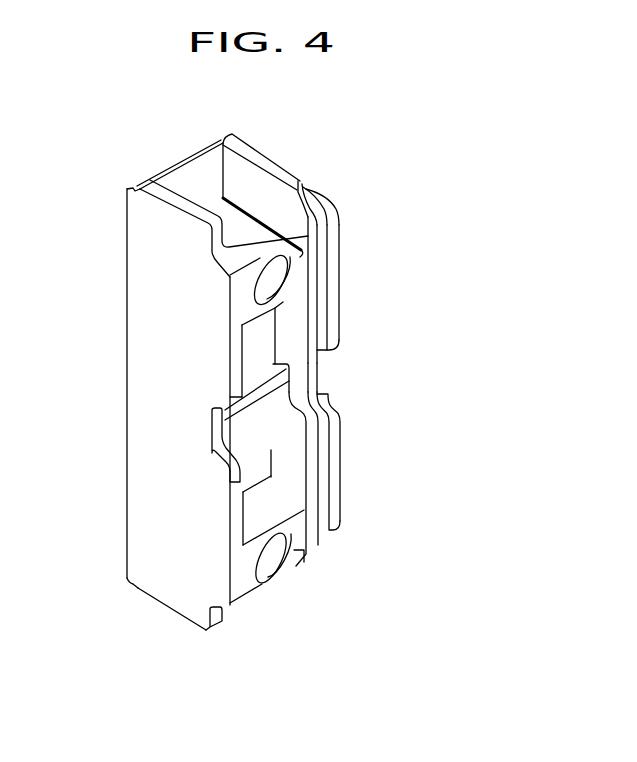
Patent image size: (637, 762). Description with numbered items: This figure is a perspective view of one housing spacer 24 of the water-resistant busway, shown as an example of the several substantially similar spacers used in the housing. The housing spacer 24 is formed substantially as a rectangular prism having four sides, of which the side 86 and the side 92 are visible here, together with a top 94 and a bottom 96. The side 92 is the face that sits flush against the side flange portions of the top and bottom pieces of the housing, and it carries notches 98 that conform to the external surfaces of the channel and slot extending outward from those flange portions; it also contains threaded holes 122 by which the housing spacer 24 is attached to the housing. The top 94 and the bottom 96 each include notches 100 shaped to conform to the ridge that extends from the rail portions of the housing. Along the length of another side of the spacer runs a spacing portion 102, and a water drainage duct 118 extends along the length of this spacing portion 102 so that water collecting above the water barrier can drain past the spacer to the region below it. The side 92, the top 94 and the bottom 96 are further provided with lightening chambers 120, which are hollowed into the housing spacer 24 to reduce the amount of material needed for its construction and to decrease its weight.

The housing spacer 24 is at (520, 393).
The side 86 is at (150, 500).
The side 92 is at (313, 490).
The top 94 is at (263, 157).
The bottom 96 is at (179, 620).
The notches 98 is at (220, 432).
The notches 100 is at (139, 186).
The spacing portion 102 is at (322, 202).
The water drainage duct 118 is at (325, 265).
The lightening chambers 120 is at (246, 198).
The threaded holes 122 is at (268, 277).